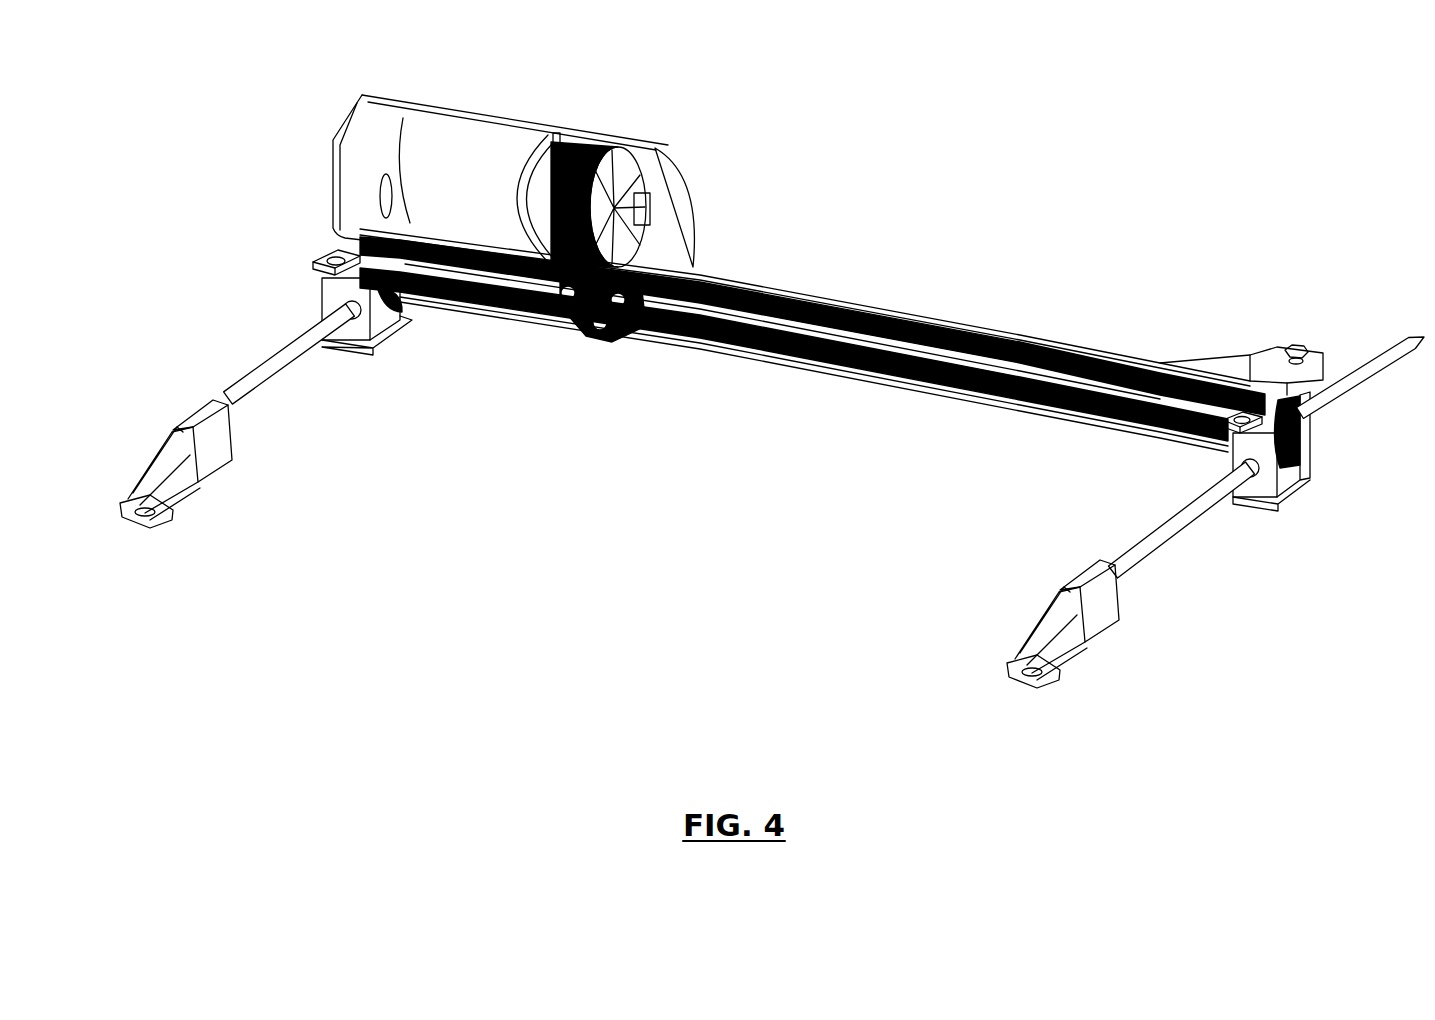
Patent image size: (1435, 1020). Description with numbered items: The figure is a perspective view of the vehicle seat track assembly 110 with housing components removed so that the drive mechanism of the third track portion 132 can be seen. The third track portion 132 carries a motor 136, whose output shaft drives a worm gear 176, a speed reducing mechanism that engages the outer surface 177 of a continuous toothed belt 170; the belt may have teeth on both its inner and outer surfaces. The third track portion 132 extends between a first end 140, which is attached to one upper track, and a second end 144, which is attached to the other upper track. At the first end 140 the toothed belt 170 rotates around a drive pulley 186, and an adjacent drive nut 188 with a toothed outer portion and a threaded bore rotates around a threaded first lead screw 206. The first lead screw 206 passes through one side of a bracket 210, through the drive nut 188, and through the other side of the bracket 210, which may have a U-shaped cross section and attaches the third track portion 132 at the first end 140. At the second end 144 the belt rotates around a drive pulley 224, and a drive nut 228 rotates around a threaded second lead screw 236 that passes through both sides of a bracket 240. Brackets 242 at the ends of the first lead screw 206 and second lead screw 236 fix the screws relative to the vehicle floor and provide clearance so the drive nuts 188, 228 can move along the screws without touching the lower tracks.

The vehicle seat track assembly 110 is at (1068, 105).
The third track portion 132 is at (885, 265).
The motor 136 is at (500, 173).
The first end 140 is at (311, 220).
The second end 144 is at (1293, 318).
The toothed belt 170 is at (1000, 334).
The worm gear 176 is at (603, 146).
The outer surface 177 is at (893, 310).
The drive pulley 186 is at (414, 298).
The drive nut 188 is at (383, 320).
The first lead screw 206 is at (257, 390).
The bracket 210 is at (368, 347).
The drive pulley 224 is at (1310, 440).
The drive nut 228 is at (1300, 478).
The second lead screw 236 is at (1163, 547).
The bracket 240 is at (1257, 505).
The brackets 242 is at (220, 463).